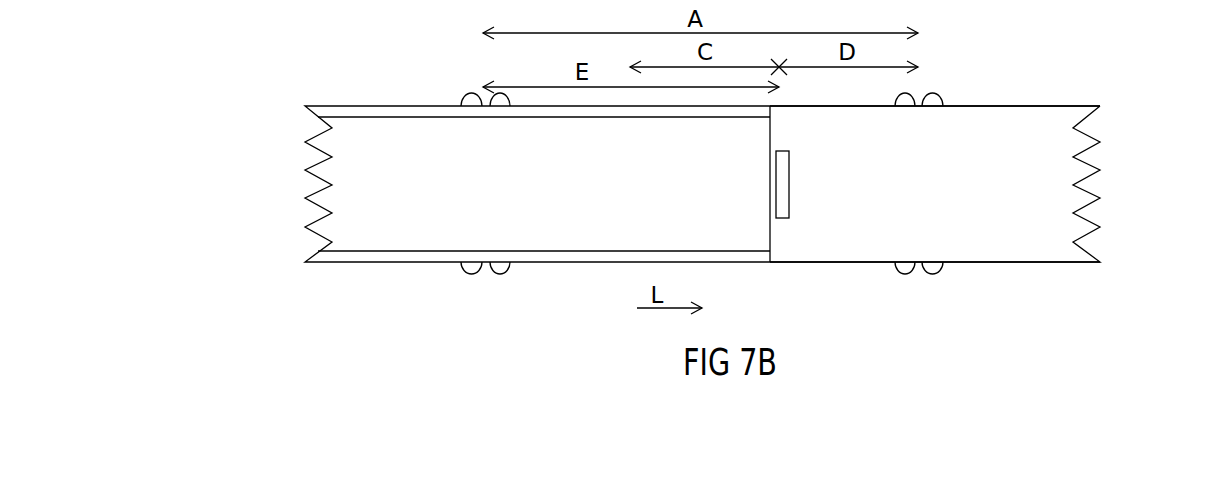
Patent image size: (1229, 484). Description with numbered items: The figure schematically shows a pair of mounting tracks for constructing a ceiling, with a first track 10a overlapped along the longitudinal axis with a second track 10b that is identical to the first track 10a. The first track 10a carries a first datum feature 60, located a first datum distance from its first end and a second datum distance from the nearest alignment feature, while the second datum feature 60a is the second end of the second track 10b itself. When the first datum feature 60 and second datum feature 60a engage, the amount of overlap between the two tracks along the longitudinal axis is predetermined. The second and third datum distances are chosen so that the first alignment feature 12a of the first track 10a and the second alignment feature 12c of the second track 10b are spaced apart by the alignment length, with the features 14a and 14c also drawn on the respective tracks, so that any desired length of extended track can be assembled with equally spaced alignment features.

The first track 10a is at (1122, 116).
The second track 10b is at (280, 132).
The first alignment feature 12a is at (923, 118).
The second alignment feature 12c is at (478, 132).
The first tube section bottom wall 14a is at (915, 241).
The inner tube bottom wall 14c is at (478, 235).
The first datum feature 60 is at (778, 180).
The second datum feature 60a is at (770, 229).